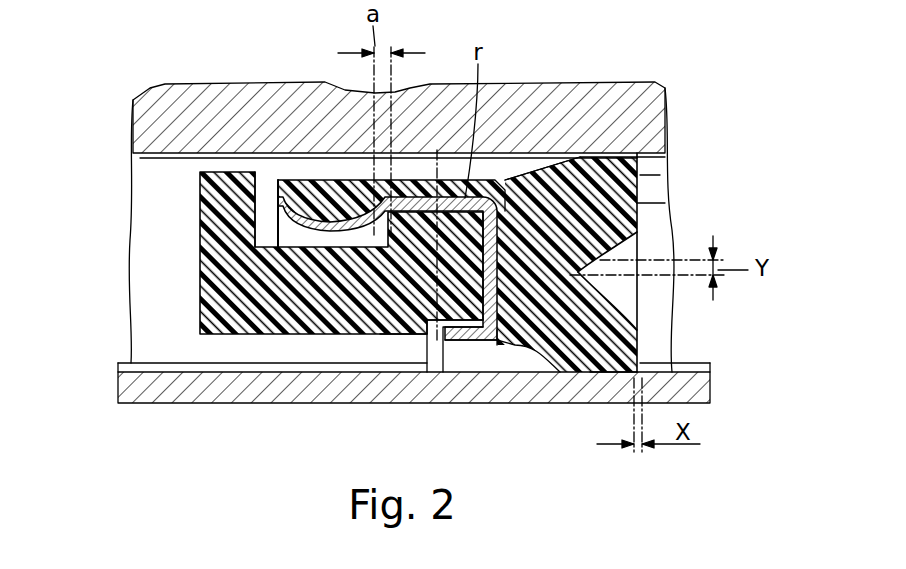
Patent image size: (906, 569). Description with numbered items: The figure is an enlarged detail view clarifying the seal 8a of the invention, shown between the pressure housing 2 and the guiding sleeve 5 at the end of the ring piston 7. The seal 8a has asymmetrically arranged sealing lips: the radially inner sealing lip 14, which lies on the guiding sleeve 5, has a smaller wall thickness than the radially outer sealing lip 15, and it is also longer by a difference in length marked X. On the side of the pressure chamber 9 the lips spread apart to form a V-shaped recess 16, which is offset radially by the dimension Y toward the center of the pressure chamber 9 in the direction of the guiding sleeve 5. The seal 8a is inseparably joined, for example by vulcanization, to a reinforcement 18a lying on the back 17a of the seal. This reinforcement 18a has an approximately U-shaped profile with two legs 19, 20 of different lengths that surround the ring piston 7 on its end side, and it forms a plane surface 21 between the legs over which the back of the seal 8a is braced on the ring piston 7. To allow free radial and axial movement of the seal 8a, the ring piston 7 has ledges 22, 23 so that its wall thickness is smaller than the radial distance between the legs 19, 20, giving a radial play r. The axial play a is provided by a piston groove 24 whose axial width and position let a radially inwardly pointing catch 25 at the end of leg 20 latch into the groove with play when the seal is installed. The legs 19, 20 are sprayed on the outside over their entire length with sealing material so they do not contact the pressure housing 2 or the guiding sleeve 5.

The pressure housing 2 is at (460, 108).
The guiding sleeve 5 is at (288, 393).
The ring piston 7 is at (242, 322).
The seal 8a is at (538, 327).
The pressure chamber 9 is at (655, 163).
The radially inner sealing lip 14 is at (600, 375).
The radially outer sealing lip 15 is at (607, 173).
The V-shaped recess 16 is at (620, 245).
The back of the seal 17a is at (497, 342).
The reinforcement 18a is at (477, 278).
The leg 19 is at (465, 348).
The leg 20 is at (483, 200).
The plane surface 21 is at (397, 333).
The ledge 22 is at (435, 347).
The ledge 23 is at (517, 168).
The piston groove 24 is at (267, 197).
The catch 25 is at (308, 190).